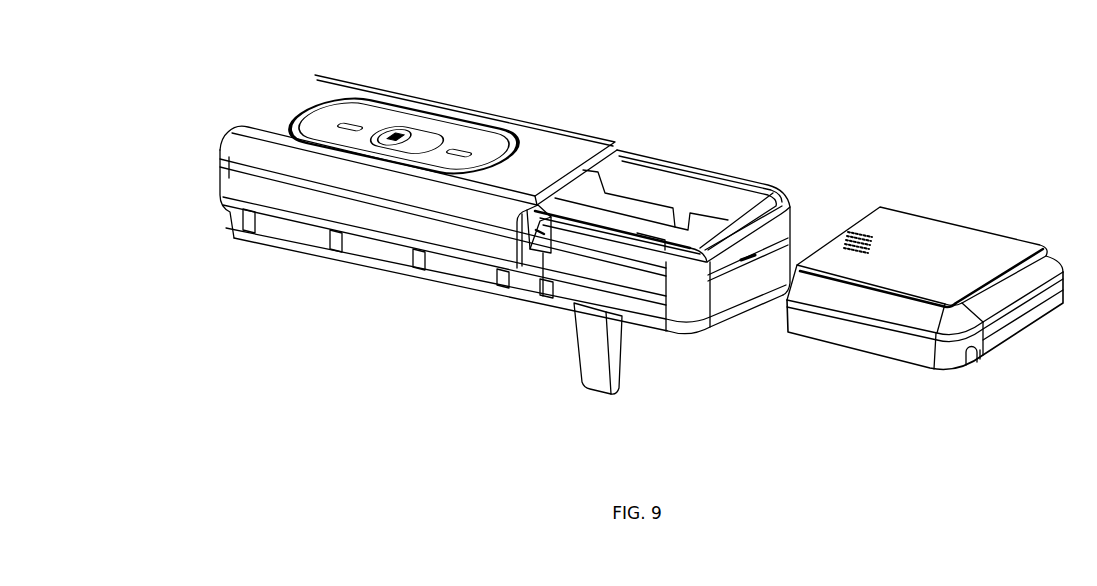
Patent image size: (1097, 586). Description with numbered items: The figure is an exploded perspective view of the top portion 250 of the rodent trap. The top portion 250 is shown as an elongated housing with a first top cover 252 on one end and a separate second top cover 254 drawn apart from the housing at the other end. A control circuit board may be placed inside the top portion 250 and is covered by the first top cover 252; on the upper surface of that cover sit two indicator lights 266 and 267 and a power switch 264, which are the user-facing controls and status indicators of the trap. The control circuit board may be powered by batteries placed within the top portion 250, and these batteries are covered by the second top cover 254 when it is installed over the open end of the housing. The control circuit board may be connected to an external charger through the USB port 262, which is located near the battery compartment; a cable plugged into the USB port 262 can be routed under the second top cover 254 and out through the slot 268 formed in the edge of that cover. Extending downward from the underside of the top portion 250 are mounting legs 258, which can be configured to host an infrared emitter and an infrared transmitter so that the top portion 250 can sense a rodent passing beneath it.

The top portion 250 is at (465, 231).
The first top cover 252 is at (558, 145).
The second top cover 254 is at (993, 247).
The mounting leg 258 is at (617, 382).
The USB port 262 is at (542, 303).
The power switch 264 is at (410, 137).
The indicator light 266 is at (353, 122).
The indicator light 267 is at (457, 150).
The slot 268 is at (973, 365).